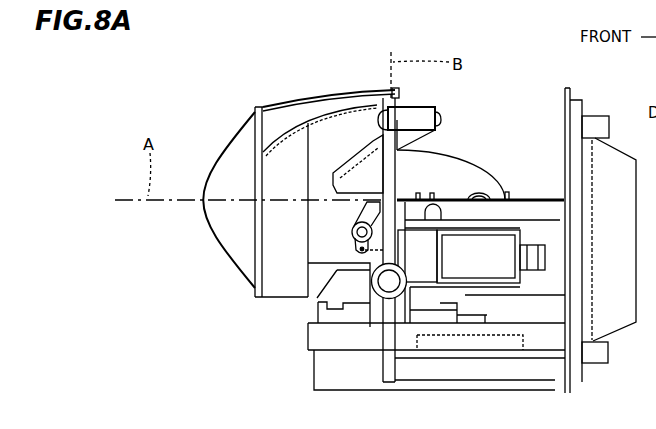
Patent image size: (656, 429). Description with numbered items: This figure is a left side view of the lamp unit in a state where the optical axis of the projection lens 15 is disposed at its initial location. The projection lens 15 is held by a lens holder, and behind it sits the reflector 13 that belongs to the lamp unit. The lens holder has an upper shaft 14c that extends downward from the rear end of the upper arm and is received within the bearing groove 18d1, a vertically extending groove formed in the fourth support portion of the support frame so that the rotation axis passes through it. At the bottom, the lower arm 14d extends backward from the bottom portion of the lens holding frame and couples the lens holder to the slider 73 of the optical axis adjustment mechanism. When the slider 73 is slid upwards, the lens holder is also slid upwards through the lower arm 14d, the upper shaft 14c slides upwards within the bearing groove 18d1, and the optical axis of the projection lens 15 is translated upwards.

The projection lens 15 is at (221, 160).
The reflector 13 is at (341, 170).
The slider 73 is at (316, 299).
The lower arm 14d is at (324, 262).
The upper shaft 14c is at (398, 100).
The bearing groove 18d1 is at (399, 118).